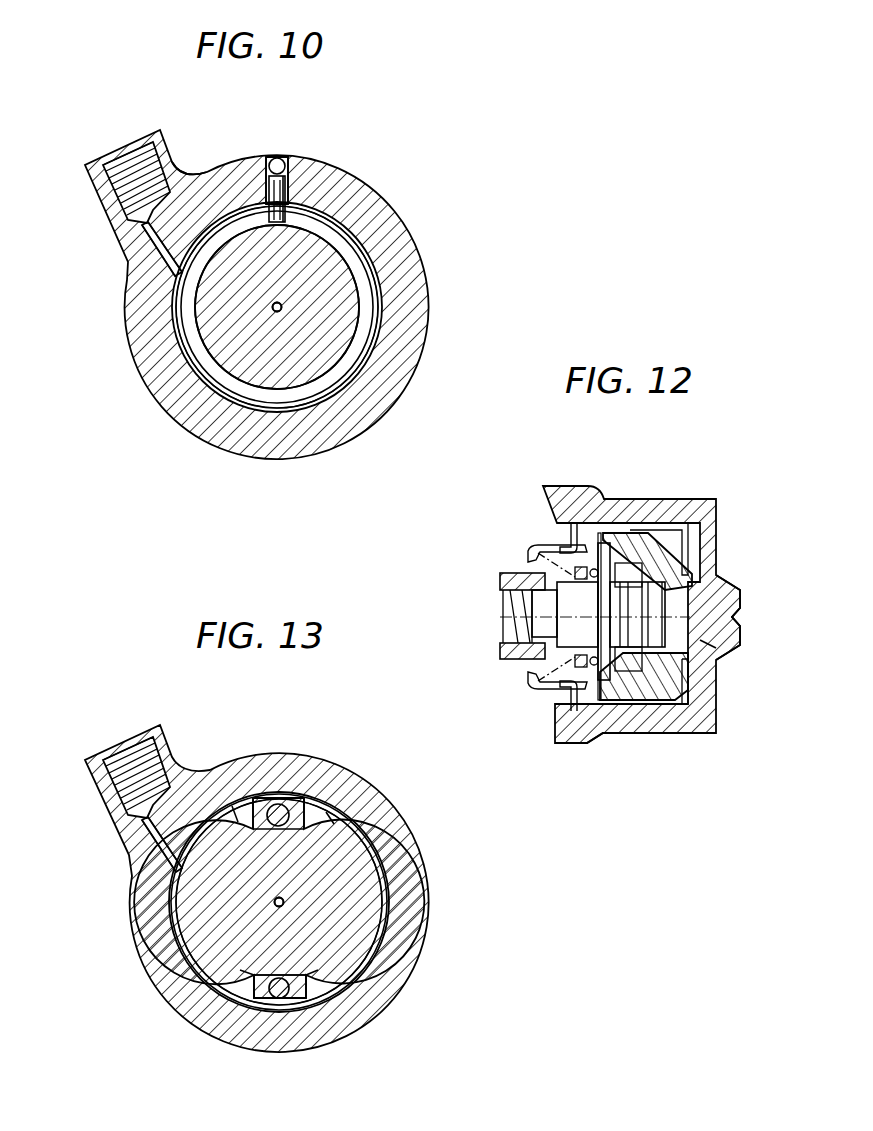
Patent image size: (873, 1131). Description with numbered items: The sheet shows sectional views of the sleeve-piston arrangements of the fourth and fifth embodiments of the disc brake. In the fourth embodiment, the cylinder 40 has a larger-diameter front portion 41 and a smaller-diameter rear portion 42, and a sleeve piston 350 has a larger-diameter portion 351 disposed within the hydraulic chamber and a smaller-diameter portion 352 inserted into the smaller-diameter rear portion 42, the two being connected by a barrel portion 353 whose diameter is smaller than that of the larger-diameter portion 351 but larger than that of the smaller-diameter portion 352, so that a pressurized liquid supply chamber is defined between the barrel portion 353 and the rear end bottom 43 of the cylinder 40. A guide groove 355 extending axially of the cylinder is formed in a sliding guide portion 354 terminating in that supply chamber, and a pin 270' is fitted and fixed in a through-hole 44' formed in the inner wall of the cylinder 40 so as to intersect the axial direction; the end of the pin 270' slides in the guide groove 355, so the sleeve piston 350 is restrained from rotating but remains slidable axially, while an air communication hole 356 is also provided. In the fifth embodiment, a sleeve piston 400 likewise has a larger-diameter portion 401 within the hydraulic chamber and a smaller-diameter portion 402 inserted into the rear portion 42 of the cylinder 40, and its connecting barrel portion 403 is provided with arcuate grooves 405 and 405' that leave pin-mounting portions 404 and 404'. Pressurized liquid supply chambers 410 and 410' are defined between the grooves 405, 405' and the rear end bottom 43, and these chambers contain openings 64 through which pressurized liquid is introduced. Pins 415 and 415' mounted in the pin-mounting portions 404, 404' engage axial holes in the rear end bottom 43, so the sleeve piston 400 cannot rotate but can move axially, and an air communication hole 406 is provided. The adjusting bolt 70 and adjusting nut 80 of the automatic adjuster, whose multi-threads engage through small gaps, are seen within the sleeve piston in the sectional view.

In FIG. 10, the cylinder 40 is at (358, 200).
In FIG. 12, the cylinder 40 is at (576, 485).
In FIG. 13, the cylinder 40 is at (208, 757).
In FIG. 12, the front portion 41 is at (610, 498).
In FIG. 12, the rear portion 42 is at (735, 590).
In FIG. 12, the rear end bottom 43 is at (690, 738).
In FIG. 10, the through-hole 44' is at (180, 148).
In FIG. 10, the opening 64 is at (170, 243).
In FIG. 13, the opening 64 is at (165, 845).
In FIG. 12, the adjusting bolt 70 is at (504, 612).
In FIG. 12, the adjusting nut 80 is at (530, 567).
In FIG. 10, the pin 270' is at (314, 151).
In FIG. 10, the sleeve piston 350 is at (299, 408).
In FIG. 10, the larger-diameter portion 351 is at (367, 333).
In FIG. 10, the smaller-diameter portion 352 is at (353, 267).
In FIG. 10, the barrel portion 353 is at (230, 377).
In FIG. 10, the sliding guide portion 354 is at (290, 200).
In FIG. 10, the guide groove 355 is at (227, 176).
In FIG. 10, the air communication hole 356 is at (282, 306).
In FIG. 12, the sleeve piston 400 is at (686, 540).
In FIG. 13, the sleeve piston 400 is at (384, 867).
In FIG. 12, the larger-diameter portion 401 is at (605, 710).
In FIG. 13, the larger-diameter portion 401 is at (367, 945).
In FIG. 12, the smaller-diameter portion 402 is at (705, 643).
In FIG. 13, the smaller-diameter portion 402 is at (248, 983).
In FIG. 12, the barrel portion 403 is at (648, 705).
In FIG. 13, the pin-mounting portion 404 is at (278, 762).
In FIG. 13, the pin-mounting portion 404' is at (271, 1037).
In FIG. 13, the arcuate groove 405 is at (261, 918).
In FIG. 13, the arcuate groove 405' is at (329, 1028).
In FIG. 12, the air communication hole 406 is at (705, 617).
In FIG. 13, the air communication hole 406 is at (274, 905).
In FIG. 12, the pressurized liquid supply chamber 410 is at (665, 499).
In FIG. 13, the pressurized liquid supply chamber 410 is at (229, 745).
In FIG. 12, the pressurized liquid supply chamber 410' is at (685, 736).
In FIG. 13, the pressurized liquid supply chamber 410' is at (379, 783).
In FIG. 13, the pin 415 is at (300, 757).
In FIG. 13, the pin 415' is at (305, 1045).